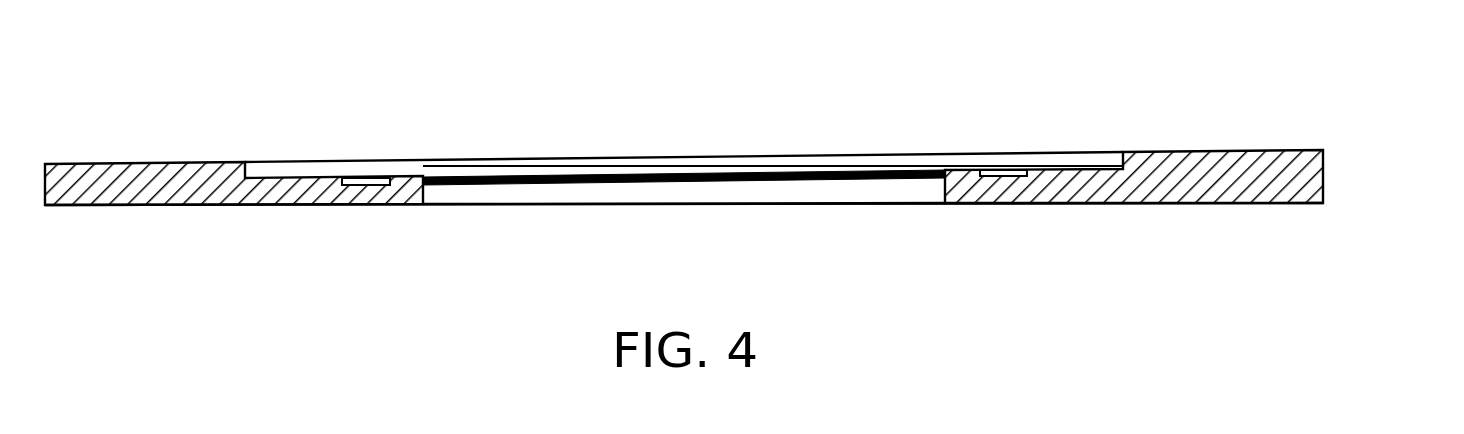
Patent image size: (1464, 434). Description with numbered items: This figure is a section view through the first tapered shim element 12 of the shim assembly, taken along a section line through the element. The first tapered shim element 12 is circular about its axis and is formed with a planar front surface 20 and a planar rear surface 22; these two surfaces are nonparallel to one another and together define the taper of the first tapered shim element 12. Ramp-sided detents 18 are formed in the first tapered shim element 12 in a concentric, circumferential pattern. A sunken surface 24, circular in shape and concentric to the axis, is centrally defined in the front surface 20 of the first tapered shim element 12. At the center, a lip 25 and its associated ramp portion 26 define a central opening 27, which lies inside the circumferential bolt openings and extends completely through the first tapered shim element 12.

The first tapered shim element 12 is at (752, 176).
The ramp-sided detents 18 is at (373, 180).
The planar front surface 20 is at (160, 163).
The planar rear surface 22 is at (200, 207).
The sunken surface 24 is at (1052, 157).
The lip 25 is at (428, 176).
The ramp portion 26 is at (722, 175).
The central opening 27 is at (665, 192).